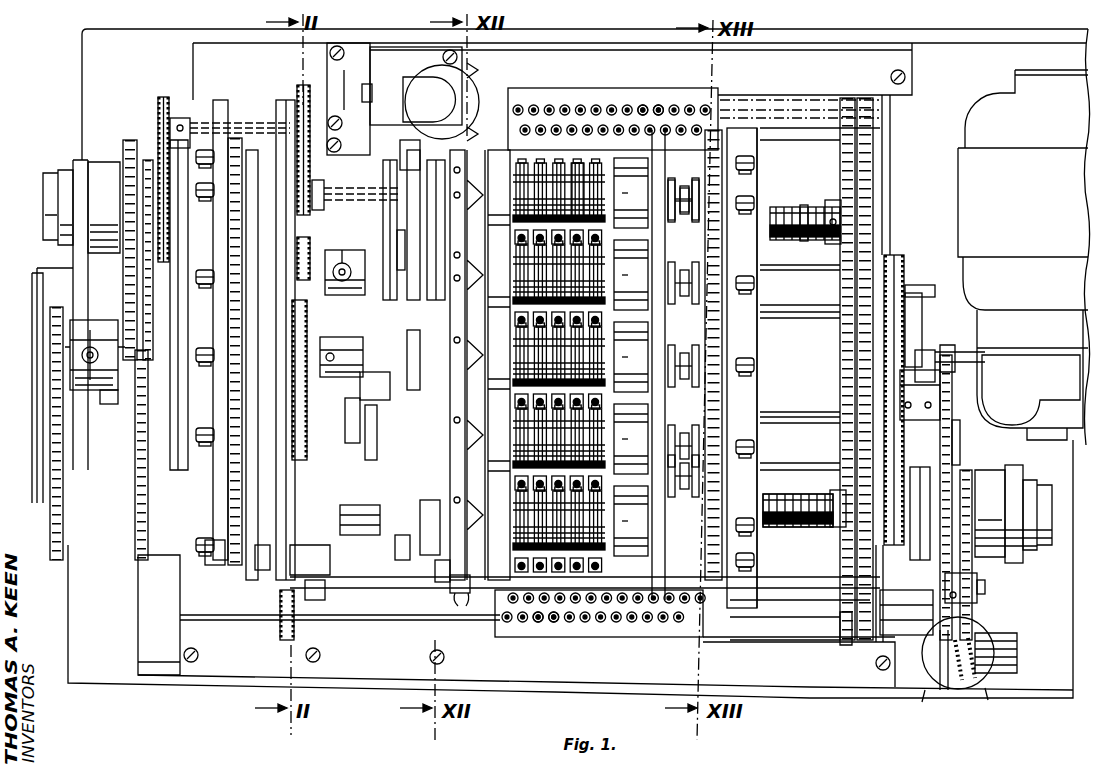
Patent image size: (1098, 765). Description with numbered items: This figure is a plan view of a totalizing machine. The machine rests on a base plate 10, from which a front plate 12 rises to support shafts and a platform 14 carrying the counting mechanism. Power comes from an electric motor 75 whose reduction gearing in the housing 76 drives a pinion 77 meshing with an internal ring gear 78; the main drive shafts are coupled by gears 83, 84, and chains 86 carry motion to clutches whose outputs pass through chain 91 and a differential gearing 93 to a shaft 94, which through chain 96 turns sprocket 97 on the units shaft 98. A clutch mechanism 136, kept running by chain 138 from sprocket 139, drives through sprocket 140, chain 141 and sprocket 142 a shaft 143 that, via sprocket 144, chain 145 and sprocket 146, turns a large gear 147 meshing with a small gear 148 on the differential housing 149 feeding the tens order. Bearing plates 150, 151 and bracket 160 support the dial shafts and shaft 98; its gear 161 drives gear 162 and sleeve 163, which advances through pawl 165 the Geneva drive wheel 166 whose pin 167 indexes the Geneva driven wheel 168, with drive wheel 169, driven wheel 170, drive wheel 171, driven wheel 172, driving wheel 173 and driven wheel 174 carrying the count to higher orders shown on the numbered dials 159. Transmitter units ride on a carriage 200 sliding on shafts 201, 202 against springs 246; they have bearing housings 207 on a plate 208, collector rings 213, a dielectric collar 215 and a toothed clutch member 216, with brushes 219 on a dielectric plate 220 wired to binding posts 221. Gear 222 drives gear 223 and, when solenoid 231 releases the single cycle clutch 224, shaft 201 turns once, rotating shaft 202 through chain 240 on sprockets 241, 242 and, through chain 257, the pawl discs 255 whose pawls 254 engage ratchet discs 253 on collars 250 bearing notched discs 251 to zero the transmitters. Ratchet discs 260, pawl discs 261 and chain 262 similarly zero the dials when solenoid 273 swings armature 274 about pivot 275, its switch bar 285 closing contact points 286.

The base plate 10 is at (118, 683).
The front plate 12 is at (890, 165).
The platform 14 is at (190, 604).
The electric motor 75 is at (1023, 163).
The housing 76 is at (1025, 348).
The pinion 77 is at (935, 356).
The internal ring gear 78 is at (925, 328).
The gear 83 is at (957, 396).
The gear 84 is at (906, 270).
The chain 86 is at (135, 441).
The chain 91 is at (50, 430).
The differential gearing 93 is at (95, 318).
The shaft 94 is at (98, 388).
The chain 96 is at (158, 112).
The sprocket 97 is at (182, 118).
The shaft 98 is at (242, 124).
The clutch mechanism 136 is at (1013, 513).
The chain 138 is at (953, 436).
The sprocket 139 is at (957, 418).
The sprocket 140 is at (972, 496).
The chain 141 is at (965, 576).
The sprocket 142 is at (978, 583).
The shaft 143 is at (770, 590).
The sprocket 144 is at (320, 600).
The chain 145 is at (396, 548).
The sprocket 146 is at (322, 350).
The large gear 147 is at (292, 326).
The small gear 148 is at (297, 240).
The differential housing 149 is at (352, 248).
The bearing plate 150 is at (300, 90).
The bearing plate 151 is at (422, 548).
The numbered dials 159 is at (440, 584).
The bearing bracket 160 is at (220, 102).
The gear 161 is at (310, 85).
The gear 162 is at (318, 182).
The sleeve 163 is at (342, 192).
The spring-pressed pawl 165 is at (406, 148).
The Geneva drive wheel 166 is at (416, 166).
The Geneva pin 167 is at (389, 238).
The Geneva driven wheel 168 is at (396, 256).
The Geneva drive wheel 169 is at (446, 262).
The Geneva driven wheel 170 is at (414, 352).
The Geneva drive wheel 171 is at (362, 384).
The driven wheel 172 is at (372, 424).
The driving wheel 173 is at (347, 410).
The driven wheel 174 is at (362, 518).
The carriage 200 is at (752, 135).
The shaft 201 is at (792, 528).
The shaft 202 is at (816, 207).
The bearing housings 207 is at (622, 272).
The plate 208 is at (640, 498).
The collector rings 213 is at (606, 166).
The dielectric collar 215 is at (512, 166).
The annular toothed clutch member 216 is at (468, 595).
The brush 219 is at (574, 166).
The dielectric plate 220 is at (592, 99).
The binding posts 221 is at (660, 104).
The gear 222 is at (906, 476).
The gear 223 is at (888, 553).
The single cycle clutch 224 is at (948, 476).
The solenoid 231 is at (1005, 633).
The chain 240 is at (840, 364).
The sprocket 241 is at (836, 528).
The sprocket 242 is at (840, 204).
The springs 246 is at (794, 207).
The collars 250 is at (683, 186).
The discs 251 is at (660, 183).
The single notch ratchet disc 253 is at (690, 212).
The spring pressed pawl 254 is at (692, 388).
The pawl disc 255 is at (692, 342).
The chain 257 is at (735, 408).
The ratchet discs 260 is at (262, 504).
The pawl discs 261 is at (260, 562).
The chain 262 is at (225, 562).
The solenoid 273 is at (470, 96).
The right-angular armature 274 is at (410, 105).
The pivot 275 is at (372, 92).
The switch bar 285 is at (378, 66).
The contact points 286 is at (352, 52).